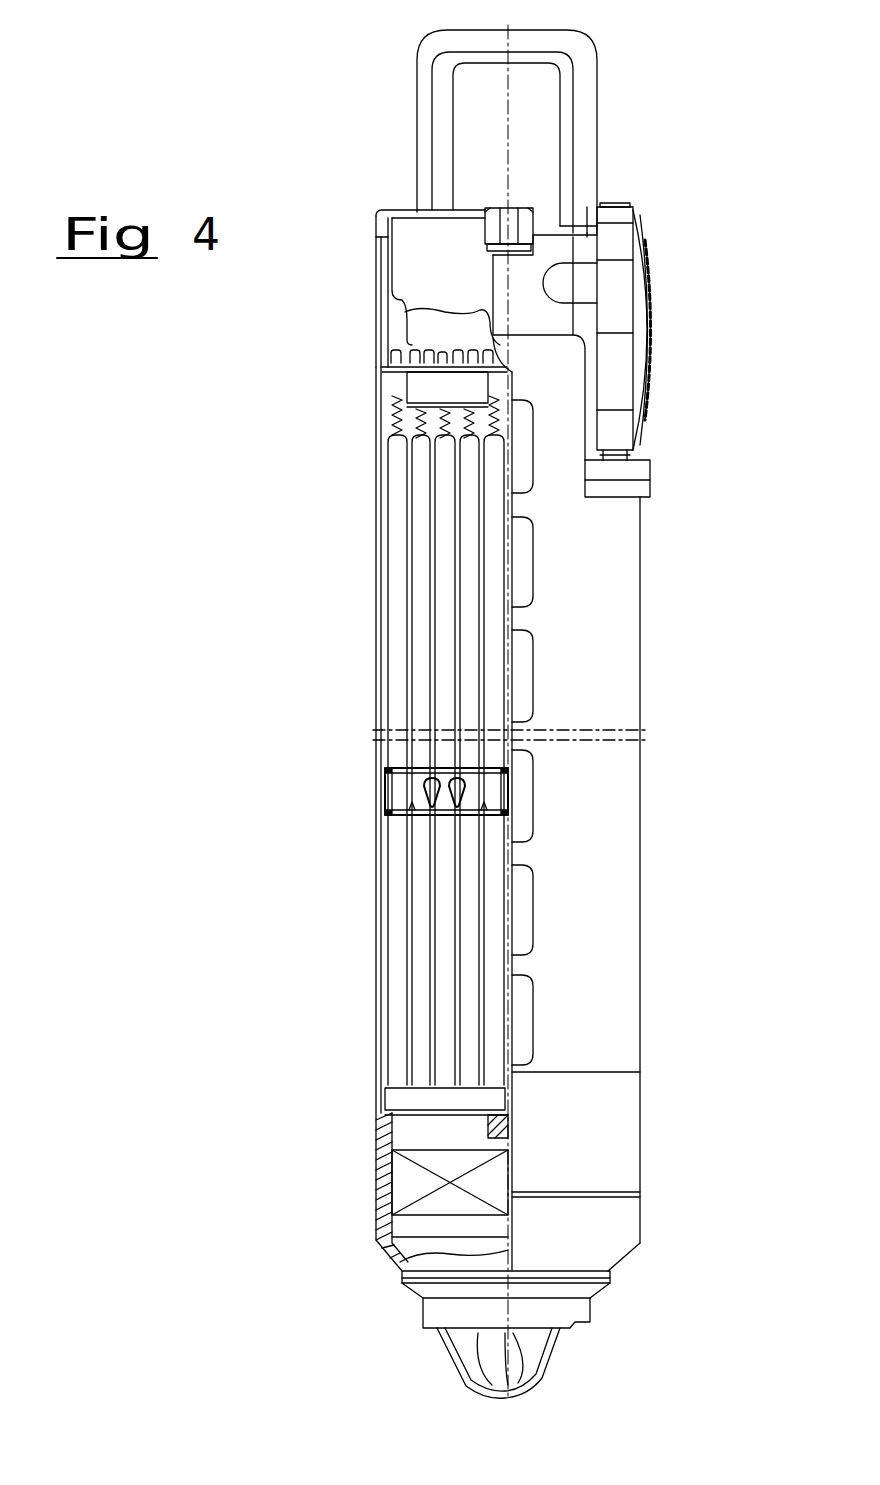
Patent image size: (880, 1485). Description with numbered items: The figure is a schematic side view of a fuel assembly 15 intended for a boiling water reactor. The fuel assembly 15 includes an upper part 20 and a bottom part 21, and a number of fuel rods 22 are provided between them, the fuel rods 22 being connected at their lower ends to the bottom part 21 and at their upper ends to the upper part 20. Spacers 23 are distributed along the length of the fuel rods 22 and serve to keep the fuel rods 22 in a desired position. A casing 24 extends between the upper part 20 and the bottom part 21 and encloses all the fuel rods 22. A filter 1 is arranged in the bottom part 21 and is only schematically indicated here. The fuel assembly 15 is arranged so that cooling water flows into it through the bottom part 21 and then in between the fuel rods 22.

The filter 1 is at (400, 1192).
The fuel assembly 15 is at (268, 500).
The upper part 20 is at (392, 312).
The bottom part 21 is at (613, 1222).
The fuel rods 22 is at (448, 668).
The spacers 23 is at (400, 796).
The casing 24 is at (613, 553).